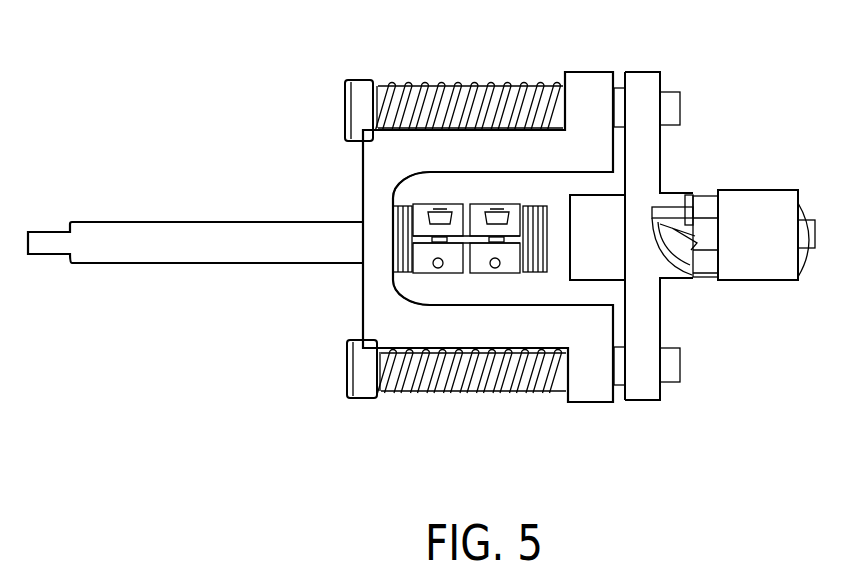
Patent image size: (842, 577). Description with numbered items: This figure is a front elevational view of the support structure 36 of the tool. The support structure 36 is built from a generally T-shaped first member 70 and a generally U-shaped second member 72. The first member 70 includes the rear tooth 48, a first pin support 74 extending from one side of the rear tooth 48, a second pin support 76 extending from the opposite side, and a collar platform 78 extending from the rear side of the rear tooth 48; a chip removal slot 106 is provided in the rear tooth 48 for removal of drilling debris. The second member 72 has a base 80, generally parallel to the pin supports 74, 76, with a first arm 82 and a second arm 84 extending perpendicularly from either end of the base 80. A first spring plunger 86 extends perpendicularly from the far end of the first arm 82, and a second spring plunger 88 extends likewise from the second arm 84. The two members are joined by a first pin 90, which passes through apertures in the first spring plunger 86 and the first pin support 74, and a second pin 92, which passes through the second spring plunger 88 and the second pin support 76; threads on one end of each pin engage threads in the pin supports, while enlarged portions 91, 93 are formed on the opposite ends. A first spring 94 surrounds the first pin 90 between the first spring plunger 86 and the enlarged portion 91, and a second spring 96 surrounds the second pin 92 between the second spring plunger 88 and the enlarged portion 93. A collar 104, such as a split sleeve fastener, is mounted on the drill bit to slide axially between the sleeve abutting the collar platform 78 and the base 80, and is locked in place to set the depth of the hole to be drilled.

The support structure 36 is at (318, 413).
The rear tooth 48 is at (674, 281).
The first member 70 is at (650, 390).
The second member 72 is at (582, 395).
The first pin support 74 is at (648, 331).
The second pin support 76 is at (652, 150).
The collar platform 78 is at (590, 205).
The base 80 is at (375, 178).
The first arm 82 is at (494, 322).
The second arm 84 is at (492, 157).
The first spring plunger 86 is at (600, 395).
The second spring plunger 88 is at (591, 87).
The first pin 90 is at (622, 375).
The enlarged portion 91 is at (349, 370).
The second pin 92 is at (618, 88).
The enlarged portion 93 is at (347, 108).
The first spring 94 is at (456, 393).
The second spring 96 is at (477, 84).
The collar 104 is at (426, 268).
The chip removal slot 106 is at (690, 196).